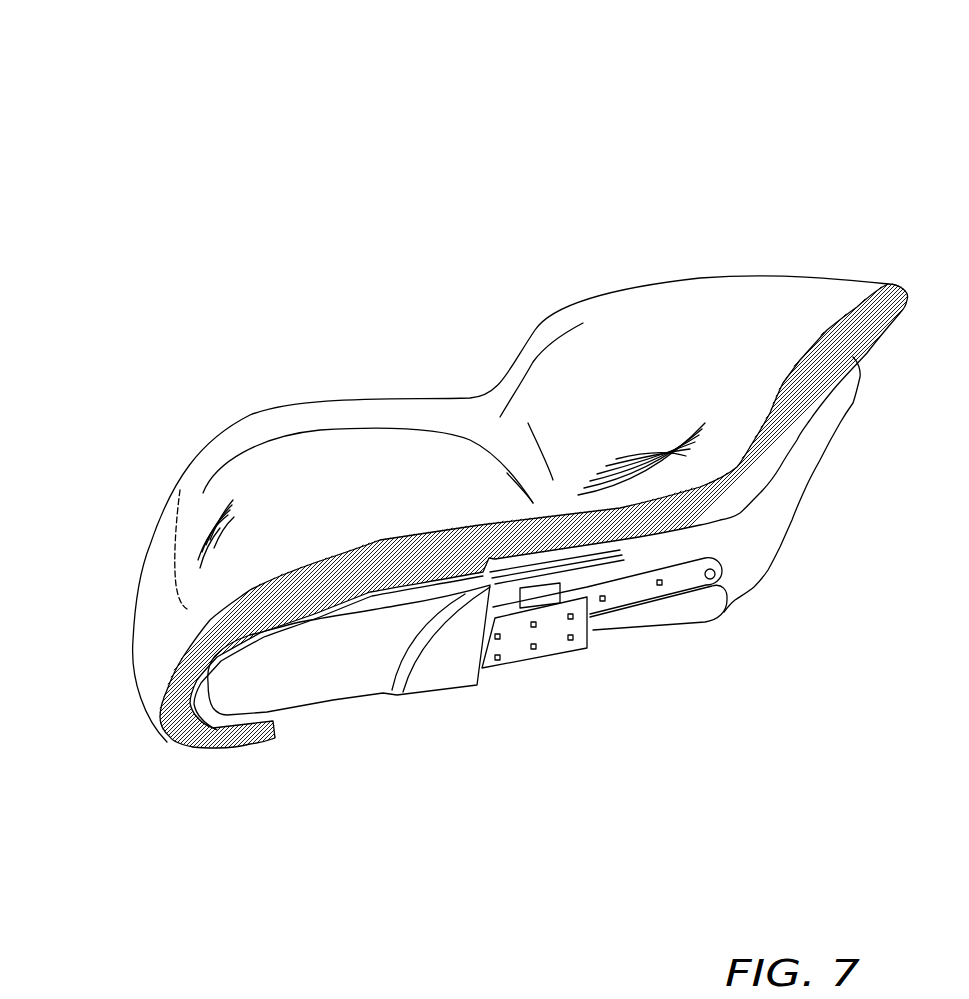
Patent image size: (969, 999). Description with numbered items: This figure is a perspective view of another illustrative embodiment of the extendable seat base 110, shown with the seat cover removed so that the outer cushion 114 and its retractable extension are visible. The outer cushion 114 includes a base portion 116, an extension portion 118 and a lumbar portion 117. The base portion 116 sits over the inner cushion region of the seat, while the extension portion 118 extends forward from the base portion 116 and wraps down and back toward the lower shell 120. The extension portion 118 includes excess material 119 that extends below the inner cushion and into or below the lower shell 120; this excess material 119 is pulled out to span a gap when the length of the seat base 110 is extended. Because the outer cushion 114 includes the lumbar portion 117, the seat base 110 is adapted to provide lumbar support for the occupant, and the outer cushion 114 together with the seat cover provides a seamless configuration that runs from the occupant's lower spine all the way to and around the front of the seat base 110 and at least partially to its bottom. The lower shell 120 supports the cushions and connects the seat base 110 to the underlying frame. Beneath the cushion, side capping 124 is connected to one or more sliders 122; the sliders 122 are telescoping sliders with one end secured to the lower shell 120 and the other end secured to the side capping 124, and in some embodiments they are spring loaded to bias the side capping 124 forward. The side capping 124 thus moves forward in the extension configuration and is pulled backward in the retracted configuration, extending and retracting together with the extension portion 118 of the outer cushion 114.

The seat base 110 is at (557, 154).
The outer cushion 114 is at (503, 372).
The base portion 116 is at (404, 448).
The lumbar portion 117 is at (760, 318).
The extension portion 118 is at (158, 624).
The excess material 119 is at (234, 748).
The lower shell 120 is at (743, 547).
The sliders 122 is at (555, 638).
The side capping 124 is at (304, 668).